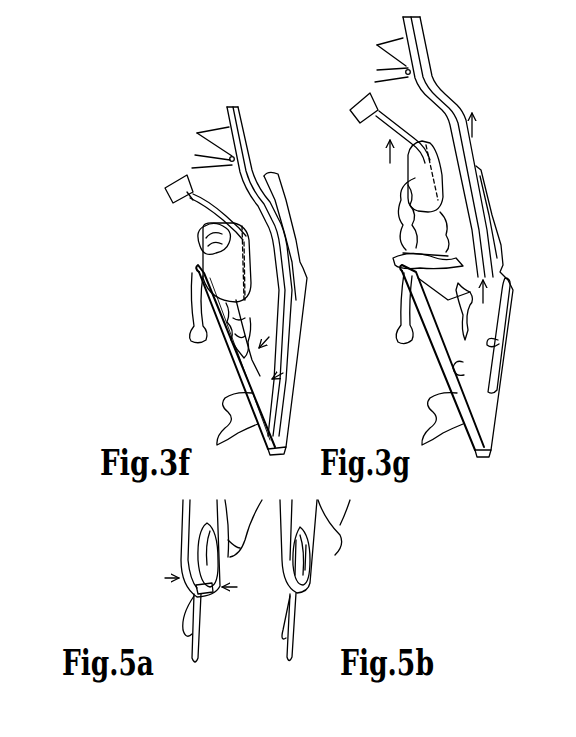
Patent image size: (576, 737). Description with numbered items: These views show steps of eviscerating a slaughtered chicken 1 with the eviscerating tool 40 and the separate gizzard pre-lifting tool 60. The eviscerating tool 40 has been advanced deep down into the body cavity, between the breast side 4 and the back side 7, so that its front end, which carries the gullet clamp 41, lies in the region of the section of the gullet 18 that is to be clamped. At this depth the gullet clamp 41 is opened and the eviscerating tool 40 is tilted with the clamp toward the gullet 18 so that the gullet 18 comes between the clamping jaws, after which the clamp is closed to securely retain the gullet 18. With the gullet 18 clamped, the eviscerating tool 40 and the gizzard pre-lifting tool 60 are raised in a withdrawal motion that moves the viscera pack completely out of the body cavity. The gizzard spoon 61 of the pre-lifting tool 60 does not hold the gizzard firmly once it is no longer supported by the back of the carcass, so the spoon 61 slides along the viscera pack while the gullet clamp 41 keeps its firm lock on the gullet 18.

In FIG. 3G, the chicken 1 is at (505, 422).
In FIG. 3G, the breast side of the body cavity 4 is at (494, 342).
In FIG. 3G, the back side of body cavity 7 is at (460, 367).
In FIG. 3F, the gullet 18 is at (250, 362).
In FIG. 5A, the gullet 18 is at (202, 607).
In FIG. 5B, the gullet 18 is at (297, 605).
In FIG. 3F, the eviscerating tool 40 is at (258, 150).
In FIG. 3G, the eviscerating tool 40 is at (446, 82).
In FIG. 3G, the gullet clamp 41 is at (444, 295).
In FIG. 3F, the gizzard pre-lifting tool 60 is at (192, 213).
In FIG. 3G, the gizzard pre-lifting tool 60 is at (575, 110).
In FIG. 3F, the gizzard spoon 61 is at (238, 262).
In FIG. 3G, the gizzard spoon 61 is at (425, 180).